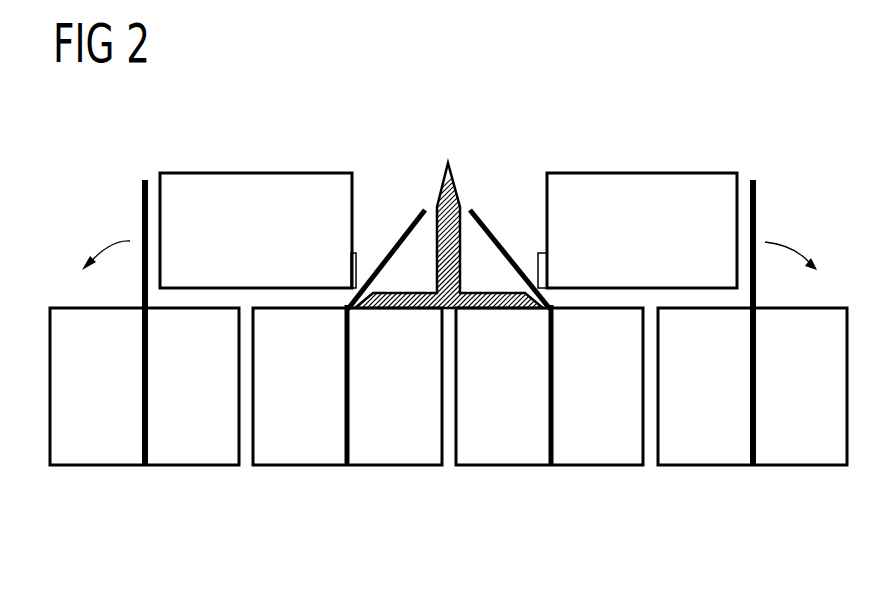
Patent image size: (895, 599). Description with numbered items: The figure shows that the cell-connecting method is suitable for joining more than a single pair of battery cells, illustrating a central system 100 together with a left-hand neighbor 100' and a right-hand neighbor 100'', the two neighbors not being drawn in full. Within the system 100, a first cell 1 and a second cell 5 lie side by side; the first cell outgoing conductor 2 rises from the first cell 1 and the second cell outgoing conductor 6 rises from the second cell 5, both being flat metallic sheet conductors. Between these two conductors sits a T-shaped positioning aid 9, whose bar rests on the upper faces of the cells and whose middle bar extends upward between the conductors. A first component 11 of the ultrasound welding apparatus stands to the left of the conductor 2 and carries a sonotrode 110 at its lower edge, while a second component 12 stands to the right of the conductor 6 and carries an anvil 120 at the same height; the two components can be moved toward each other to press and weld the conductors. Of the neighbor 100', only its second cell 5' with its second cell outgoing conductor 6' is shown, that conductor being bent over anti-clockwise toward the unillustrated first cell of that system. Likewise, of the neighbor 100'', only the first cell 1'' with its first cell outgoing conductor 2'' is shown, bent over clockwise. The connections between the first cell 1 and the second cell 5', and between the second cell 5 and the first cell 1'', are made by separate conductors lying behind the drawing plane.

The first cell 1 is at (347, 423).
The first cell of the right-hand neighbor system 1'' is at (752, 423).
The second cell 5 is at (549, 424).
The second cell of the left-hand neighbor system 5' is at (144, 424).
The first cell outgoing conductor 2 is at (386, 311).
The first cell outgoing conductor of the right-hand neighbor system 2'' is at (785, 322).
The second cell outgoing conductor 6 is at (510, 311).
The second cell outgoing conductor of the left-hand neighbor system 6' is at (113, 322).
The positioning aid 9 is at (465, 155).
The first component 11 is at (243, 173).
The second component 12 is at (655, 173).
The sonotrode 110 is at (358, 253).
The anvil 120 is at (538, 253).
The system 100 is at (448, 332).
The left-hand neighbor system 100' is at (144, 381).
The right-hand neighbor system 100'' is at (747, 383).